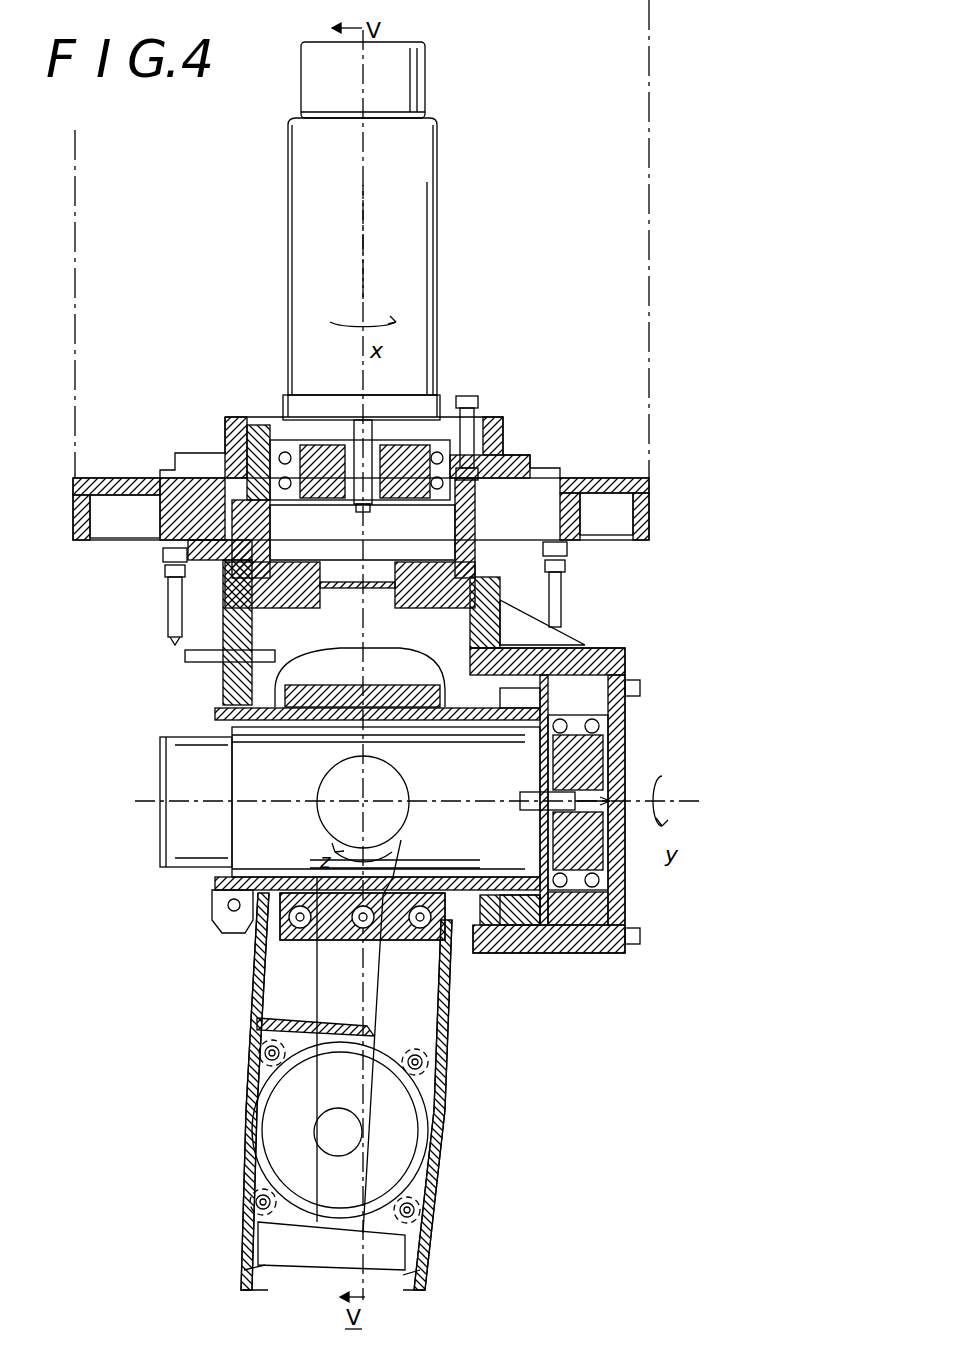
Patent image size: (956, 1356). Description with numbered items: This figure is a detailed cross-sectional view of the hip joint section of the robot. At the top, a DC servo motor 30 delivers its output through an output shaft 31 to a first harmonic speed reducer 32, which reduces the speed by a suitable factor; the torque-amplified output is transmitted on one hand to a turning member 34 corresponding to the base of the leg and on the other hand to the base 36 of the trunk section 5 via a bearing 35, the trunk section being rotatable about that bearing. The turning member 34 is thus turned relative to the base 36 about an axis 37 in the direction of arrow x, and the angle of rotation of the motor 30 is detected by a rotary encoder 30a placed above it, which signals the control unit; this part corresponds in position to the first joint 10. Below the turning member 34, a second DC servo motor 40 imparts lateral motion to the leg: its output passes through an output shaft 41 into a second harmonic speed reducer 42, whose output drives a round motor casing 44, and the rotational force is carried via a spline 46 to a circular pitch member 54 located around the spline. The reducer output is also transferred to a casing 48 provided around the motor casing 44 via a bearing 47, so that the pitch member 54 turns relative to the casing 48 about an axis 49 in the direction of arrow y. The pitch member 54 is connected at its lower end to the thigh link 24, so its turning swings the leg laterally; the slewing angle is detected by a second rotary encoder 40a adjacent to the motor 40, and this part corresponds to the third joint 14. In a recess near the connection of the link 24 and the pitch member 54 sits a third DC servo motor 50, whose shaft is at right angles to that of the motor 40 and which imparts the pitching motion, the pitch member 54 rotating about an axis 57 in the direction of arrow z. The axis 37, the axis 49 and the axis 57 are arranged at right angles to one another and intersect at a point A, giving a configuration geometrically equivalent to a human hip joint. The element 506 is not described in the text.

The trunk section 5 is at (652, 238).
The first joint 10 is at (510, 415).
The third joint 14 is at (622, 648).
The thigh link 24 is at (245, 1253).
The DC servo motor 30 is at (425, 215).
The rotary encoder 30a is at (412, 95).
The output shaft 31 is at (372, 430).
The first harmonic speed reducer 32 is at (460, 385).
The turning member 34 is at (272, 548).
The bearing 35 is at (455, 545).
The base 36 is at (606, 478).
The axis 37 is at (365, 197).
The second DC servo motor 40 is at (228, 878).
The second rotary encoder 40a is at (175, 850).
The output shaft 41 is at (520, 800).
The second harmonic speed reducer 42 is at (590, 775).
The motor casing 44 is at (470, 945).
The spline 46 is at (390, 692).
The bearing 47 is at (447, 738).
The casing 48 is at (480, 628).
The axis 49 is at (690, 803).
The third DC servo motor 50 is at (405, 1125).
The pitch member 54 is at (300, 692).
The axis 57 is at (358, 802).
The guide 506 is at (400, 858).
The point A is at (362, 802).